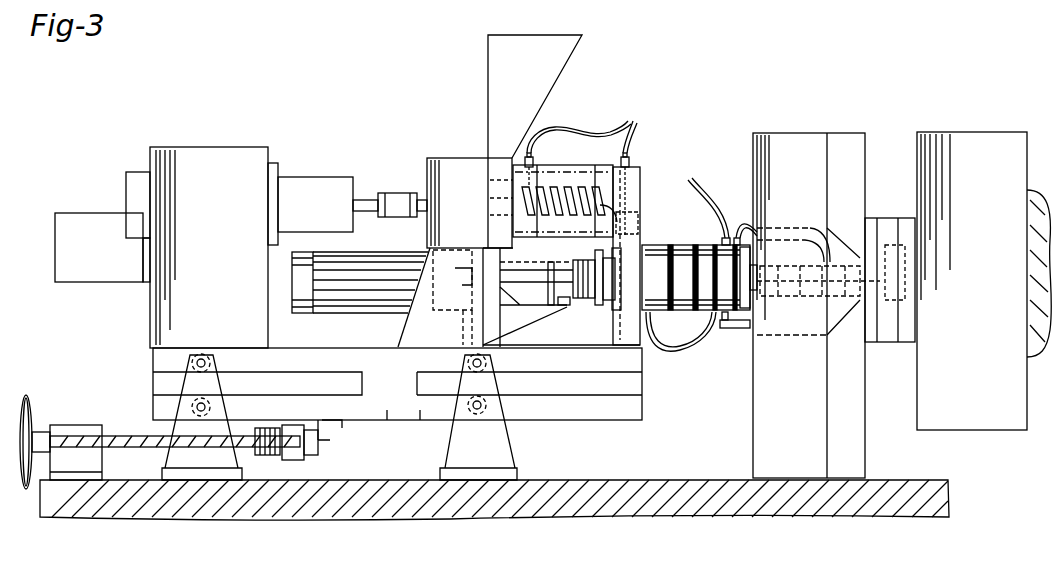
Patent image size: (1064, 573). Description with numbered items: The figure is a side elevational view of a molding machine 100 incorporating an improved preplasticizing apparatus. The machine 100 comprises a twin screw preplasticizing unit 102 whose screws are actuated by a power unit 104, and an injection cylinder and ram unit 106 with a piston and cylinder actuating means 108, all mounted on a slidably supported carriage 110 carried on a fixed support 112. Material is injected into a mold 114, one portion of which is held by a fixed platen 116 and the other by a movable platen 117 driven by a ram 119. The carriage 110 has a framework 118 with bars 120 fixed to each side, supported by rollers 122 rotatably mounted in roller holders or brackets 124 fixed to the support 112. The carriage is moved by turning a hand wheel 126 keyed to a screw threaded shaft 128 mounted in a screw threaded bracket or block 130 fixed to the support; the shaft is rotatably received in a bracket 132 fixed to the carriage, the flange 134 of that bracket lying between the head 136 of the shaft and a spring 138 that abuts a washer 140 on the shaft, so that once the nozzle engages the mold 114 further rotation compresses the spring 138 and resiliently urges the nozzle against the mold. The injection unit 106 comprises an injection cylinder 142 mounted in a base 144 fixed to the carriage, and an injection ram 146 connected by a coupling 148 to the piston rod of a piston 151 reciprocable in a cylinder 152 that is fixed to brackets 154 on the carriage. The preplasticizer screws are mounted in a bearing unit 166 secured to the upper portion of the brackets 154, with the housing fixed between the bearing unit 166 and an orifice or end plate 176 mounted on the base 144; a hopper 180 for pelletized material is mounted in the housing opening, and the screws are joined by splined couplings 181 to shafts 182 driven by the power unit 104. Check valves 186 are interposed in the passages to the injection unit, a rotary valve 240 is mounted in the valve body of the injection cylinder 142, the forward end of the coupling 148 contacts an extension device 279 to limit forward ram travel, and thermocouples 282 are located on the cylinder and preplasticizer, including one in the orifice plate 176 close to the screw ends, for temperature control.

The molding machine 100 is at (680, 130).
The twin screw preplasticizing unit 102 is at (587, 166).
The power unit 104 is at (259, 146).
The injection cylinder and ram unit 106 is at (604, 322).
The piston and cylinder actuating means 108 is at (296, 314).
The carriage 110 is at (387, 420).
The fixed support 112 is at (919, 478).
The mold 114 is at (905, 228).
The fixed platen 116 is at (860, 181).
The movable platen 117 is at (937, 136).
The framework 118 is at (418, 420).
The ram 119 is at (1030, 194).
The bars 120 is at (153, 386).
The rollers 122 is at (206, 357).
The roller holders or brackets 124 is at (182, 464).
The hand wheel 126 is at (24, 396).
The screw threaded shaft 128 is at (118, 447).
The screw threaded bracket or block 130 is at (70, 425).
The bracket 132 is at (322, 442).
The flange 134 is at (312, 455).
The head 136 is at (330, 430).
The spring 138 is at (292, 460).
The washer 140 is at (262, 455).
The injection cylinder 142 is at (680, 246).
The base 144 is at (638, 348).
The injection ram 146 is at (608, 300).
The coupling 148 is at (567, 264).
The piston 151 is at (437, 316).
The cylinder 152 is at (356, 256).
The brackets 154 is at (406, 326).
The bearing unit 166 is at (452, 158).
The orifice or end plate 176 is at (641, 192).
The hopper 180 is at (573, 48).
The splined couplings 181 is at (412, 196).
The shafts 182 is at (365, 199).
The valve 186 is at (642, 215).
The rotary valve 240 is at (738, 210).
The extension device 279 is at (598, 252).
The thermocouples 282 is at (533, 160).